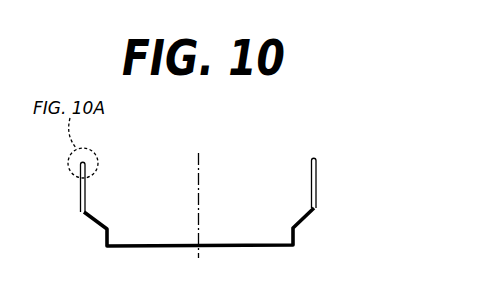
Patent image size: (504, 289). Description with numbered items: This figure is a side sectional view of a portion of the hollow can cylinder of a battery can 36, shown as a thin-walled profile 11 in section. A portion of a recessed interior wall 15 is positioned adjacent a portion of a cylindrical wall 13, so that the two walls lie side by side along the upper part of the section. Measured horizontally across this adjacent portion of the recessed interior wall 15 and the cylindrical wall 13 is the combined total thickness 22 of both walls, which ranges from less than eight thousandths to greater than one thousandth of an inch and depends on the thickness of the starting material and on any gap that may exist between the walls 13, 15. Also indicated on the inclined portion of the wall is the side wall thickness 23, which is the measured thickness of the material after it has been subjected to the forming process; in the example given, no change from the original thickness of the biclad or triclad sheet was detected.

The bracket 11 is at (410, 134).
The cylindrical wall 13 is at (81, 190).
The recessed interior wall 15 is at (86, 181).
The combined total thickness 22 is at (275, 163).
The side wall thickness 23 is at (280, 192).
The battery can 36 is at (335, 144).